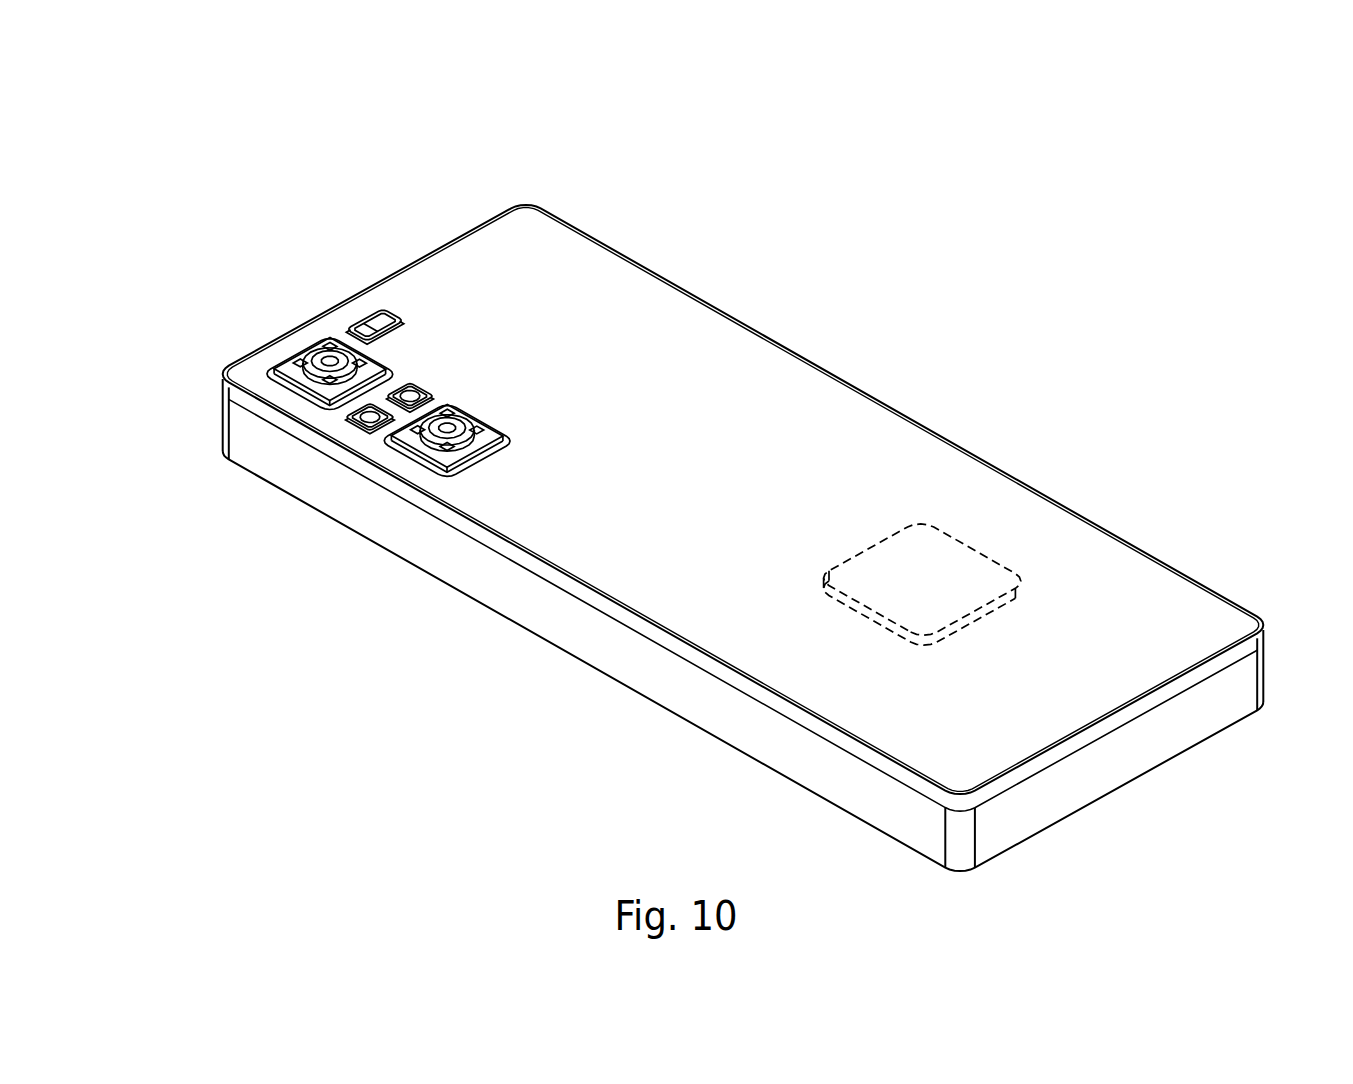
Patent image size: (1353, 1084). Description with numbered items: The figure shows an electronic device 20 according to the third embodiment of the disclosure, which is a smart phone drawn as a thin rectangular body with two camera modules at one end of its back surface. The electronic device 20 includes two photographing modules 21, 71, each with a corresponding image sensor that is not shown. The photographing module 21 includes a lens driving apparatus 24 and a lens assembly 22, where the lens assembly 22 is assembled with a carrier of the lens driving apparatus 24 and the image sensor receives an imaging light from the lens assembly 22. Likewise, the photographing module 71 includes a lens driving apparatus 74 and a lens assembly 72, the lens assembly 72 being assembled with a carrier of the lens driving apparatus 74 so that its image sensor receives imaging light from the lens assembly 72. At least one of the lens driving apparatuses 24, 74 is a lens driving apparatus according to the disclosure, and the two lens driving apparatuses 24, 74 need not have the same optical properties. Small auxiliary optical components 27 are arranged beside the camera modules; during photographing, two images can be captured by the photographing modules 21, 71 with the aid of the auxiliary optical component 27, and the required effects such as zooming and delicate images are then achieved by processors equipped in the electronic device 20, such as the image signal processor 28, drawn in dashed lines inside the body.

The electronic device 20 is at (134, 88).
The photographing module 21 is at (298, 293).
The lens assembly 22 is at (330, 364).
The lens driving apparatus 24 is at (294, 371).
The auxiliary optical component 27 is at (371, 318).
The image signal processor 28 is at (948, 543).
The photographing module 71 is at (434, 568).
The lens assembly 72 is at (458, 445).
The lens driving apparatus 74 is at (445, 461).